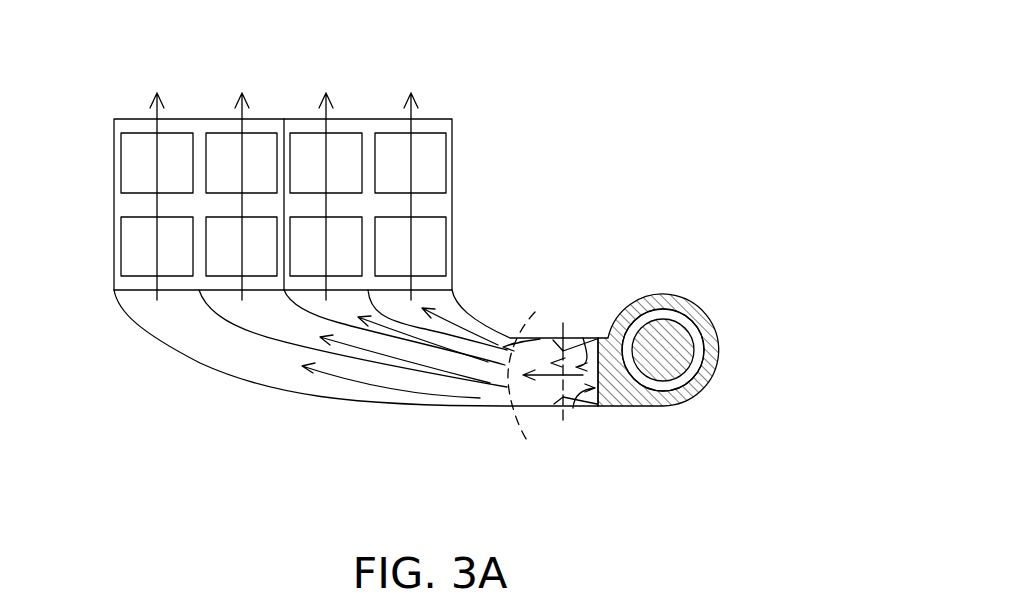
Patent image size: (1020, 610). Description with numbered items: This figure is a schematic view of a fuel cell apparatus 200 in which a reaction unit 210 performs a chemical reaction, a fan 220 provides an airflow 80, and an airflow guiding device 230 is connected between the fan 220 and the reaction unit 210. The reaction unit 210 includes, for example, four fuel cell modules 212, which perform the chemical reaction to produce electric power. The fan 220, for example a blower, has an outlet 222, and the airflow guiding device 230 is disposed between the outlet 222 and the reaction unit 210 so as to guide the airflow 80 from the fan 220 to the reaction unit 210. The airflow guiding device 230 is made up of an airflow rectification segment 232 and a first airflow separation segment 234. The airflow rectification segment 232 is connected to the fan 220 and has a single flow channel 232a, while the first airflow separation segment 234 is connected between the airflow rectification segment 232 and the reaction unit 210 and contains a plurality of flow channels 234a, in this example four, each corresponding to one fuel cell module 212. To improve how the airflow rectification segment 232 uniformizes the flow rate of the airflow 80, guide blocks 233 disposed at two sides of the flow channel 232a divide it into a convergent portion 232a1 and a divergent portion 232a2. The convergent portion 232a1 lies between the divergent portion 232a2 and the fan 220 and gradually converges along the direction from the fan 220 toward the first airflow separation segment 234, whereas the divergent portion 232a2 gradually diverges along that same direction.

The fuel cell apparatus 200 is at (747, 508).
The reaction unit 210 is at (145, 46).
The fuel cell module 212 is at (283, 91).
The fan 220 is at (720, 348).
The outlet 222 is at (590, 407).
The airflow guiding device 230 is at (470, 490).
The airflow rectification segment 232 is at (552, 433).
The flow channel 232a is at (610, 239).
The convergent portion 232a1 is at (598, 336).
The divergent portion 232a2 is at (583, 338).
The guide block 233 is at (573, 408).
The first airflow separation segment 234 is at (495, 433).
The flow channel 234a is at (543, 348).
The airflow 80 is at (546, 355).